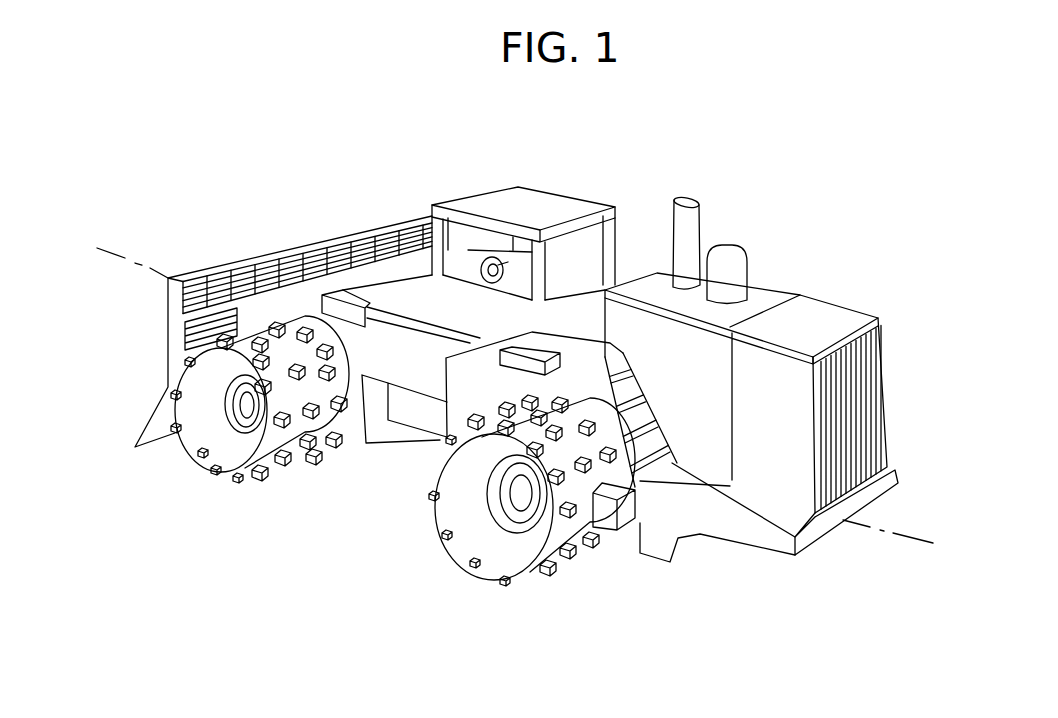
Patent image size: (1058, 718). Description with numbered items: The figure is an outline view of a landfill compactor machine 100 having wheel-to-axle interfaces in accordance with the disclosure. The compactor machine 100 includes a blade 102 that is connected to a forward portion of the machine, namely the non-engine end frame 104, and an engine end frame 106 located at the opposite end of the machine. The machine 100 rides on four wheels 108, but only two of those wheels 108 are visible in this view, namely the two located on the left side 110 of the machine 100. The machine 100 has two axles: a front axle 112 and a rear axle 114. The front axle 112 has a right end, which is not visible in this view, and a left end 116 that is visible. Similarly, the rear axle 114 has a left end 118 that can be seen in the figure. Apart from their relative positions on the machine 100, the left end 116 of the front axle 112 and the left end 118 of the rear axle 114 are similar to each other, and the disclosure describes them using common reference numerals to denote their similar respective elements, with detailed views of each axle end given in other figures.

The landfill compactor machine 100 is at (745, 178).
The blade 102 is at (338, 232).
The non-engine end frame 104 is at (257, 207).
The engine end frame 106 is at (893, 370).
The wheels 108 is at (212, 448).
The left side 110 is at (313, 556).
The front axle 112 is at (372, 455).
The rear axle 114 is at (655, 575).
The left end of front axle 116 is at (267, 500).
The left end of rear axle 118 is at (572, 586).